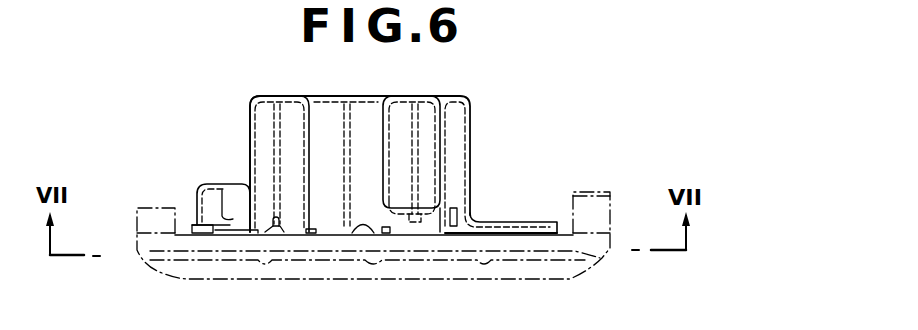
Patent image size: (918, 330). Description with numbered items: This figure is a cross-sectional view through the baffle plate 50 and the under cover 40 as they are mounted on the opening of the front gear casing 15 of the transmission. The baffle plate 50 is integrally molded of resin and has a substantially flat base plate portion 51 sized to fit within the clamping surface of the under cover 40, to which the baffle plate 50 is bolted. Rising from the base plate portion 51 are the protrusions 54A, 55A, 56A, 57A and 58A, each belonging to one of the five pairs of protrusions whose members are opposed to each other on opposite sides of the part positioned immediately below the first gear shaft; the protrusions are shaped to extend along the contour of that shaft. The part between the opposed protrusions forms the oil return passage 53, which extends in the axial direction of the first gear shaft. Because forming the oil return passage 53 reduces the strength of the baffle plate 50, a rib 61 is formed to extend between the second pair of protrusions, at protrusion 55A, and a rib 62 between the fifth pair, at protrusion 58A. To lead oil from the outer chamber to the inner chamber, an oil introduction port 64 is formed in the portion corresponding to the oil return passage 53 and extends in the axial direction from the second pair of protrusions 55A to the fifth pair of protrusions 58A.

The front gear casing 15 is at (580, 194).
The under cover 40 is at (573, 282).
The baffle plate 50 is at (478, 139).
The base plate portion 51 is at (471, 213).
The oil return passage 53 is at (385, 233).
The protrusion 54A is at (238, 183).
The protrusion 55A is at (267, 115).
The protrusion 56A is at (361, 162).
The protrusion 57A is at (392, 104).
The protrusion 58A is at (455, 117).
The rib 61 is at (257, 231).
The rib 62 is at (455, 226).
The oil introduction port 64 is at (312, 233).